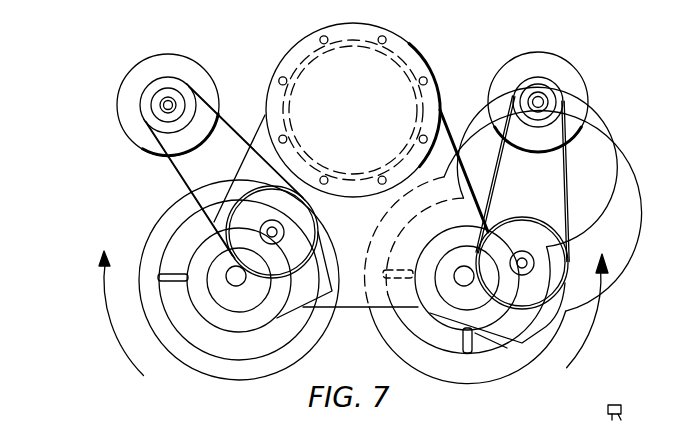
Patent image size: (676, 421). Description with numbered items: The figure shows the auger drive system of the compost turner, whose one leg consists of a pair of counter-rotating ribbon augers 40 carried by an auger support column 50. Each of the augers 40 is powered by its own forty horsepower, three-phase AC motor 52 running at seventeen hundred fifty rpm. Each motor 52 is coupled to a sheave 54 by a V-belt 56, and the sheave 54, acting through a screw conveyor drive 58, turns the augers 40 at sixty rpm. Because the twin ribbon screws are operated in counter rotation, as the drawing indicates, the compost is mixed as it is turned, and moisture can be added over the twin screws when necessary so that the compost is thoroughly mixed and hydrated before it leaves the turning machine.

The ribbon augers 40 is at (210, 372).
The auger support column 50 is at (418, 57).
The AC motor 52 is at (127, 80).
The sheave 54 is at (551, 253).
The V-belt 56 is at (569, 186).
The screw conveyor drive 58 is at (563, 333).